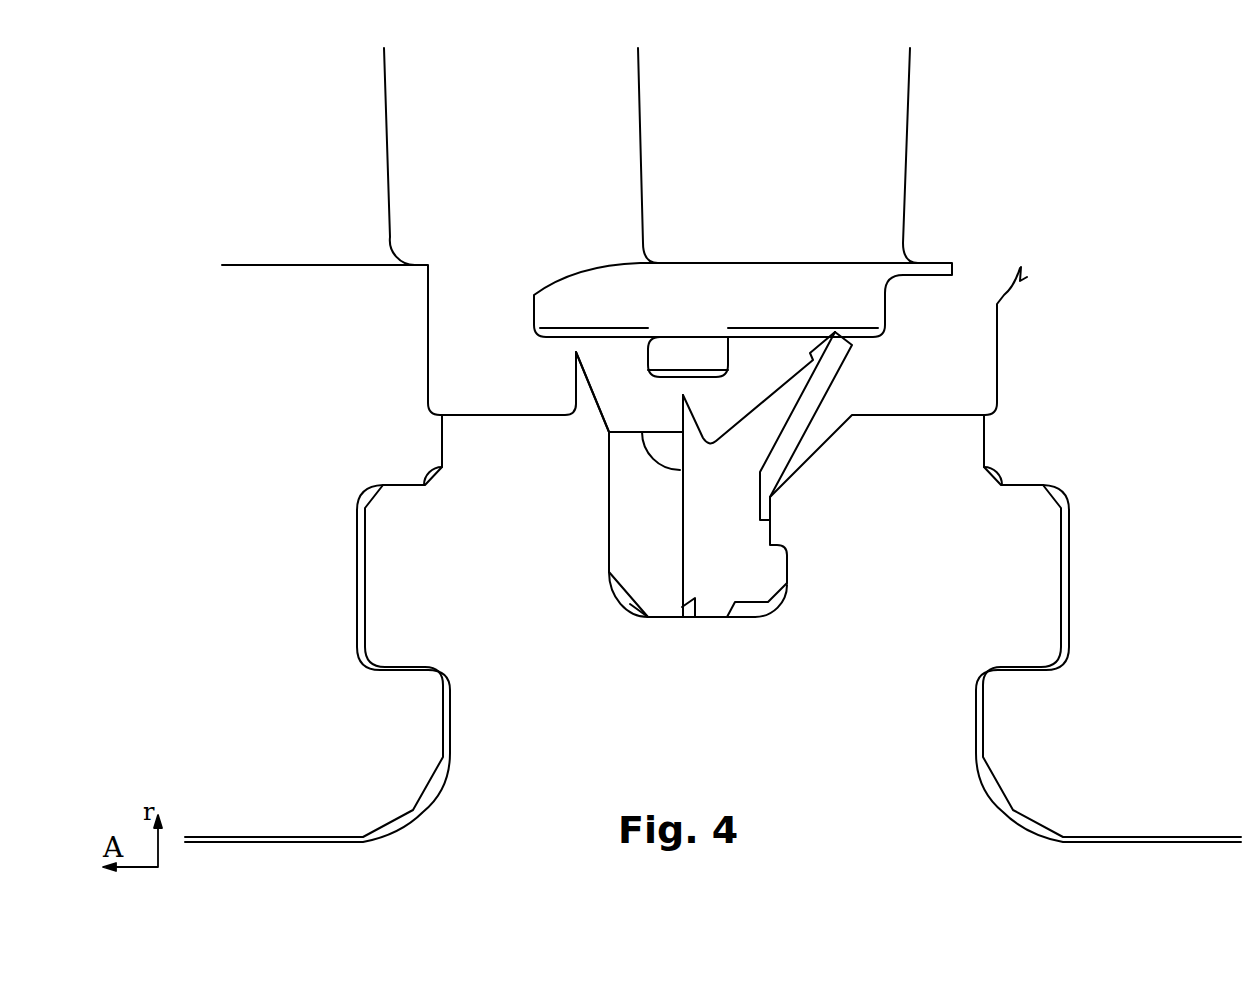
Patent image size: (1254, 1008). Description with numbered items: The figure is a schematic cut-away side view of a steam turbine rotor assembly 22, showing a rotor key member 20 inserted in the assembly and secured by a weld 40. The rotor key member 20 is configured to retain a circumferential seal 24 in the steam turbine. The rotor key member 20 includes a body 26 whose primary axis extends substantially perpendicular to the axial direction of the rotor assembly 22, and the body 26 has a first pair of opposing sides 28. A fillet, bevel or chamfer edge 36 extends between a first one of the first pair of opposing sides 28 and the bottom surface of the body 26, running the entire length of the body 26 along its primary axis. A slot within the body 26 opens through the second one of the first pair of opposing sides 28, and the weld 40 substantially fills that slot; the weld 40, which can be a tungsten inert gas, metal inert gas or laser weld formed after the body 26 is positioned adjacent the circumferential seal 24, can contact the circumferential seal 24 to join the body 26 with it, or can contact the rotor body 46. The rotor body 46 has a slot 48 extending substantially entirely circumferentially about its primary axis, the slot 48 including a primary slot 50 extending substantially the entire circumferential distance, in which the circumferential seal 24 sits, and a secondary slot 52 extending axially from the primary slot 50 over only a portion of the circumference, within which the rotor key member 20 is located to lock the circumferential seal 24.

The rotor key member 20 is at (660, 527).
The steam turbine rotor assembly 22 is at (176, 311).
The circumferential seal 24 is at (737, 538).
The body 26 is at (625, 450).
The first pair of opposing sides 28 is at (607, 513).
The fillet, bevel or chamfer edge 36 is at (615, 593).
The weld 40 is at (668, 448).
The rotor body 46 is at (893, 657).
The slot 48 is at (657, 672).
The primary slot 50 is at (752, 636).
The secondary slot 52 is at (615, 632).